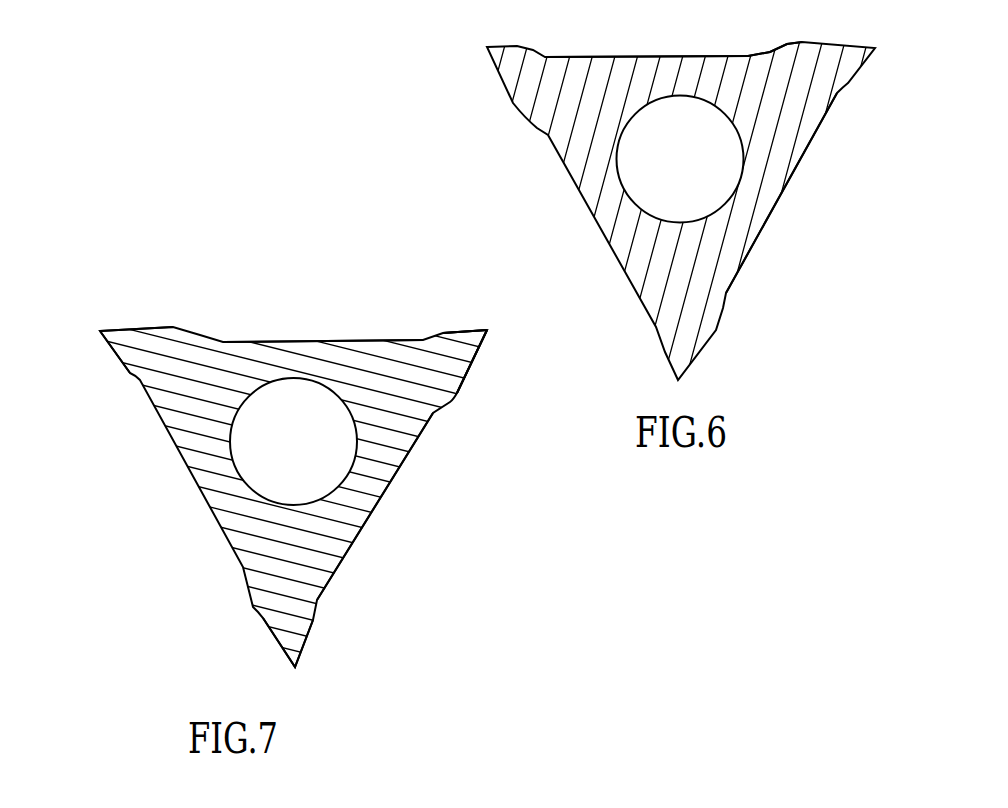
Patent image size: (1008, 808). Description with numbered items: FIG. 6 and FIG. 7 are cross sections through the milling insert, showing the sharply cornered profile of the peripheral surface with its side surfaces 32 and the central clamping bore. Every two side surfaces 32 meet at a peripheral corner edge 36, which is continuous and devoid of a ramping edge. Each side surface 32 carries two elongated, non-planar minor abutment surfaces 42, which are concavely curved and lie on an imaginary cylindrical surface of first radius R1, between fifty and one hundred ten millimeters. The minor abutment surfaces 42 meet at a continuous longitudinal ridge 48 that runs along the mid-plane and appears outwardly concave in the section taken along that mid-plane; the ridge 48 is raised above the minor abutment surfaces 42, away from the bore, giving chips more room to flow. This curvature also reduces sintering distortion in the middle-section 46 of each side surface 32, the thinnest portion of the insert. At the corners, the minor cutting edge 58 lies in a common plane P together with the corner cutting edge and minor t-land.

In FIG. 6, the side surface 32 is at (750, 47).
In FIG. 7, the side surface 32 is at (104, 322).
In FIG. 6, the first radius R1 is at (686, 49).
In FIG. 7, the first radius R1 is at (309, 331).
In FIG. 6, the middle-section 46 is at (799, 193).
In FIG. 7, the middle-section 46 is at (387, 514).
In FIG. 6, the longitudinal ridge 48 is at (783, 187).
In FIG. 7, the minor abutment surface 42 is at (370, 517).
In FIG. 7, the peripheral corner edge 36 is at (497, 328).
In FIG. 7, the minor cutting edge 58 is at (100, 332).
In FIG. 7, the common plane P is at (465, 328).